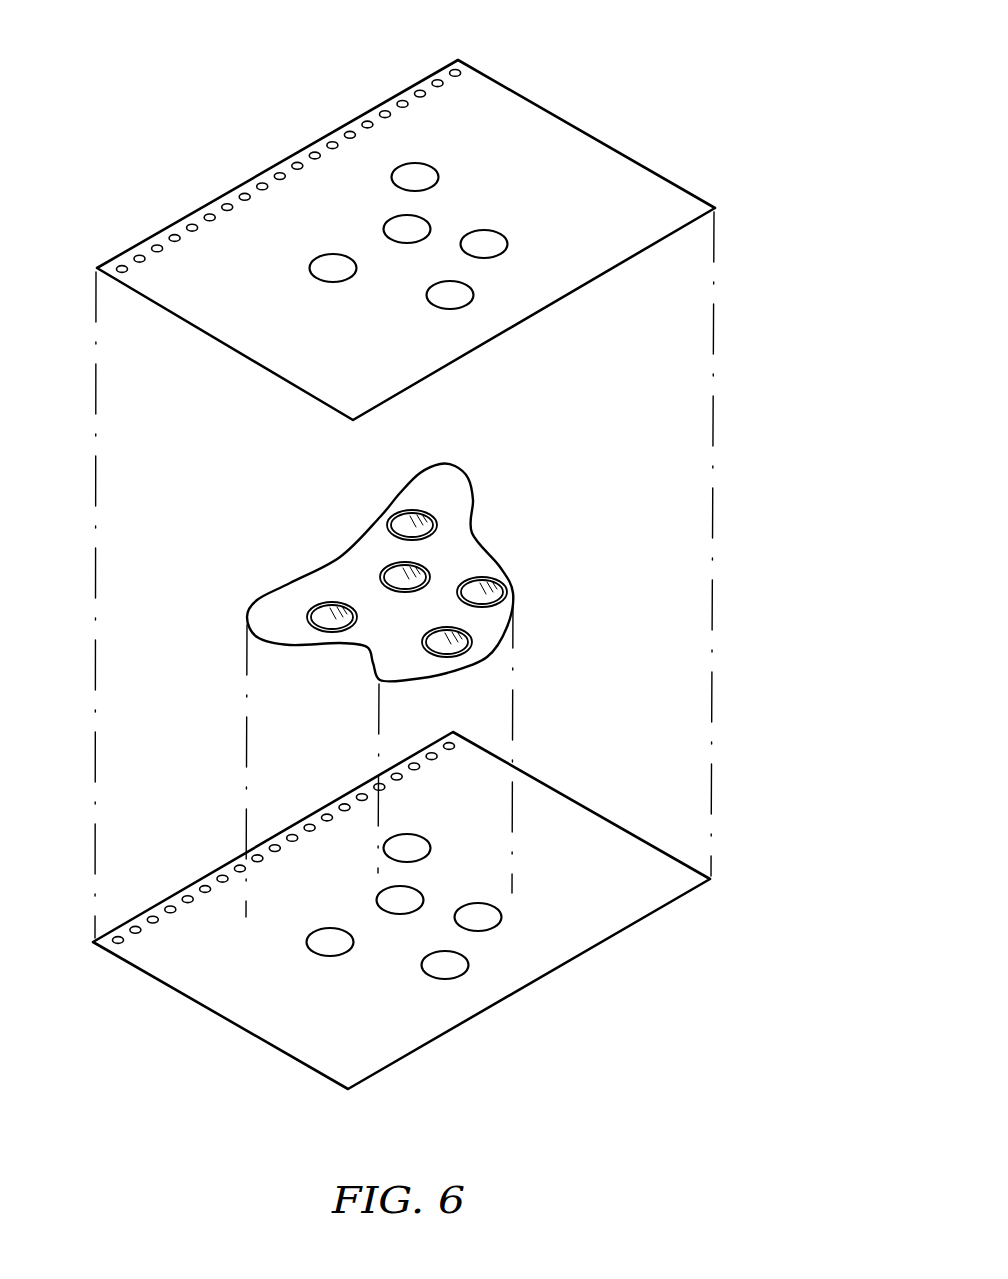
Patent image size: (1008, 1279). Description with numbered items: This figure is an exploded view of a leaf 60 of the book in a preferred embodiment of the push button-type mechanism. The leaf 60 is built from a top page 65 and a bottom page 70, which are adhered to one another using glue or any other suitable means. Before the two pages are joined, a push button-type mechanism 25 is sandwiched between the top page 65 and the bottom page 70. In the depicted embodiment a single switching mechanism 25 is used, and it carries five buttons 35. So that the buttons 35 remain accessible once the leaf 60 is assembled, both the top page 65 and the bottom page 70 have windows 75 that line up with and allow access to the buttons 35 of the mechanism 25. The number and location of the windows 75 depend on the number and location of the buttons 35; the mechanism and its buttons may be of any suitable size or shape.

The leaf 60 is at (557, 98).
The top page 65 is at (650, 187).
The bottom page 70 is at (573, 943).
The windows 75 is at (495, 243).
The push button-type mechanism 25 is at (472, 560).
The buttons 35 is at (410, 515).